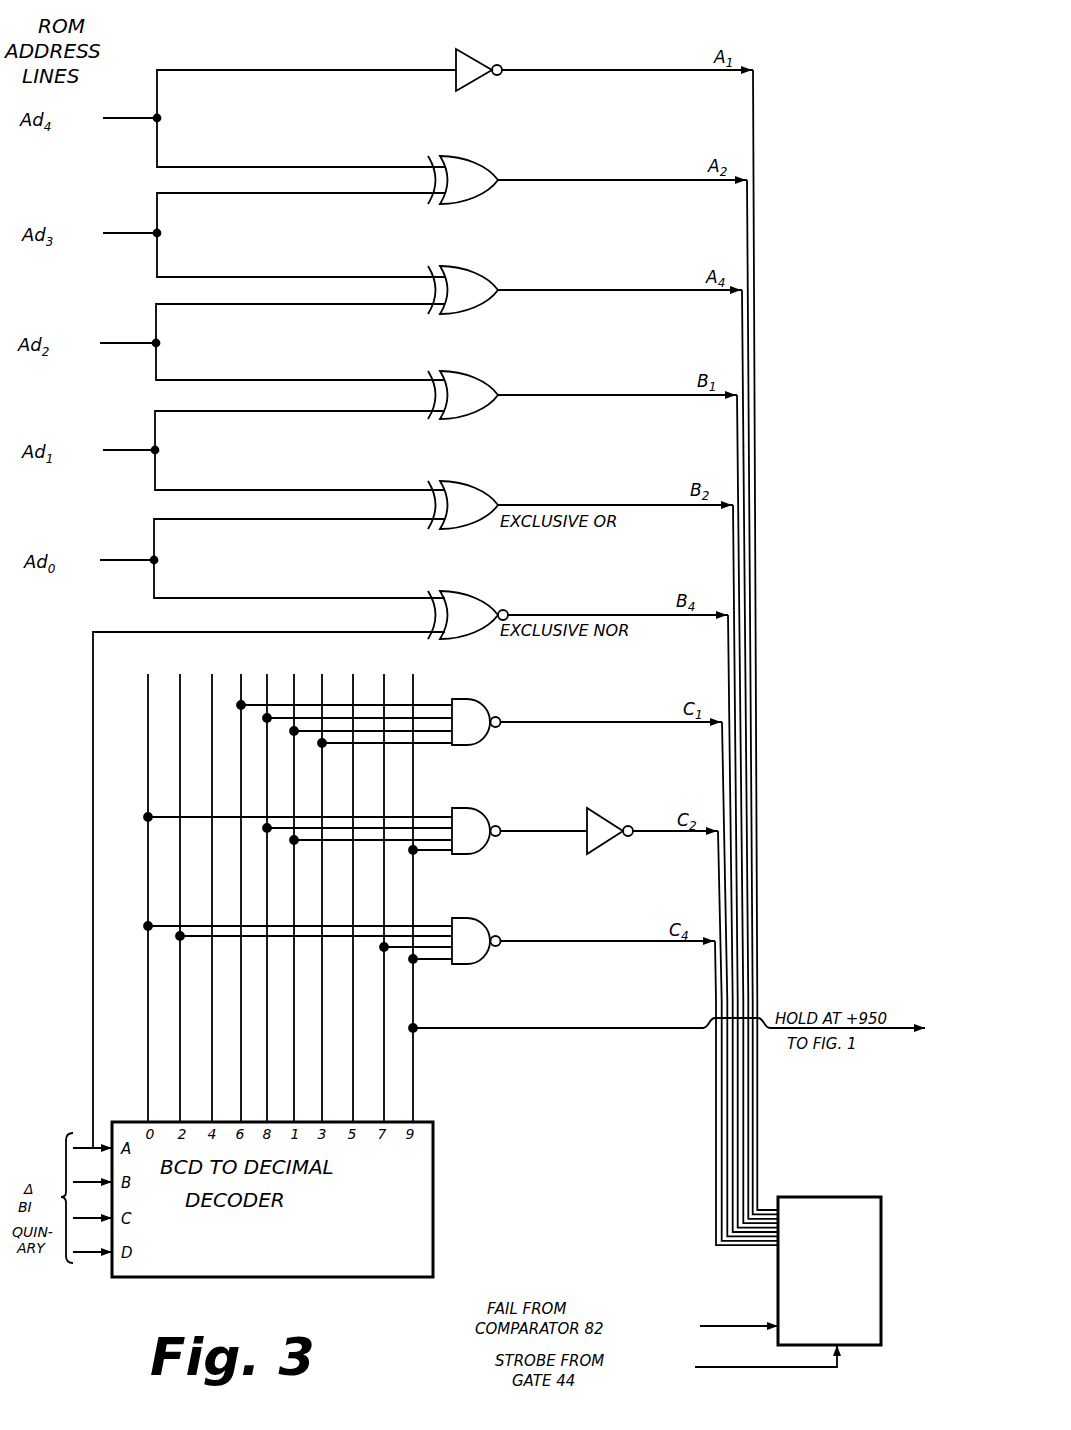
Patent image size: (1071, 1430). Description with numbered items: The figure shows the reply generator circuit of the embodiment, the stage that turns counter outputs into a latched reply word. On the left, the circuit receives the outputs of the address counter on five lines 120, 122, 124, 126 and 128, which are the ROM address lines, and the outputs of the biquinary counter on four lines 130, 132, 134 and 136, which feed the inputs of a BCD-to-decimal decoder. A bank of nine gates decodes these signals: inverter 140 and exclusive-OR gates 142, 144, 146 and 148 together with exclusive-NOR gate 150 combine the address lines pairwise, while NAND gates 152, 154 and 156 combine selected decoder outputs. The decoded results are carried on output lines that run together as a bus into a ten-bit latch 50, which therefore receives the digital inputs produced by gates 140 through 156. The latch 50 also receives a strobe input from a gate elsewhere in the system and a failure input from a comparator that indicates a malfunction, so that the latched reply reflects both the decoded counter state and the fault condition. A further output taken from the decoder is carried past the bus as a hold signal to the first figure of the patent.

The 10-bit latch 50 is at (778, 1268).
The address counter output line 120 is at (122, 560).
The address counter output line 122 is at (125, 450).
The address counter output line 124 is at (118, 342).
The address counter output line 126 is at (120, 232).
The address counter output line 128 is at (135, 120).
The biquinary counter output line 130 is at (90, 1253).
The biquinary counter output line 132 is at (90, 1220).
The biquinary counter output line 134 is at (85, 1182).
The biquinary counter output line 136 is at (85, 1146).
The gate 140 is at (480, 58).
The gate 142 is at (480, 176).
The gate 144 is at (482, 284).
The gate 146 is at (482, 390).
The gate 148 is at (484, 500).
The gate 150 is at (485, 610).
The gate 152 is at (490, 716).
The gate 154 is at (487, 822).
The gate 156 is at (487, 931).